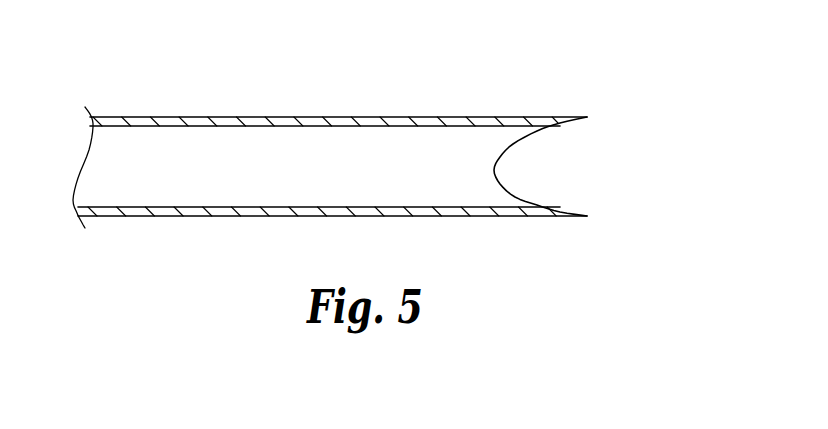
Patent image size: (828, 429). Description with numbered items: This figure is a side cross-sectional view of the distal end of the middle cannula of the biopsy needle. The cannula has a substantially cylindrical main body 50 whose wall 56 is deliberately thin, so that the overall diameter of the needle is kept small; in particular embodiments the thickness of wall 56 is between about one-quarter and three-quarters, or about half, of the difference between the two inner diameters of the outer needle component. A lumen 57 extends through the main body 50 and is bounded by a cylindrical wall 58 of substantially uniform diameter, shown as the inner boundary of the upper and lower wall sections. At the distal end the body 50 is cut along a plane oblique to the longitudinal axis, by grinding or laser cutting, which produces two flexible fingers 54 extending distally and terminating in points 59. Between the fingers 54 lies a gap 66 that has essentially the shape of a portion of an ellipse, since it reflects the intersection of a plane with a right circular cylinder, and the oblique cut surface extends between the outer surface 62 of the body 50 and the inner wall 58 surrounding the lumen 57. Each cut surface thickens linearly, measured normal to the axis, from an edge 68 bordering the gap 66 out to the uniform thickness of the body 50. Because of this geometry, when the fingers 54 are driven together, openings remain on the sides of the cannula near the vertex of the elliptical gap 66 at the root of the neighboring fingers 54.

The main body 50 is at (330, 120).
The flexible fingers 54 is at (549, 170).
The wall 56 is at (325, 85).
The lumen 57 is at (377, 113).
The cylindrical wall 58 is at (319, 232).
The points 59 is at (635, 163).
The outer surface 62 is at (434, 223).
The gaps 66 is at (533, 218).
The edge 68 is at (517, 105).